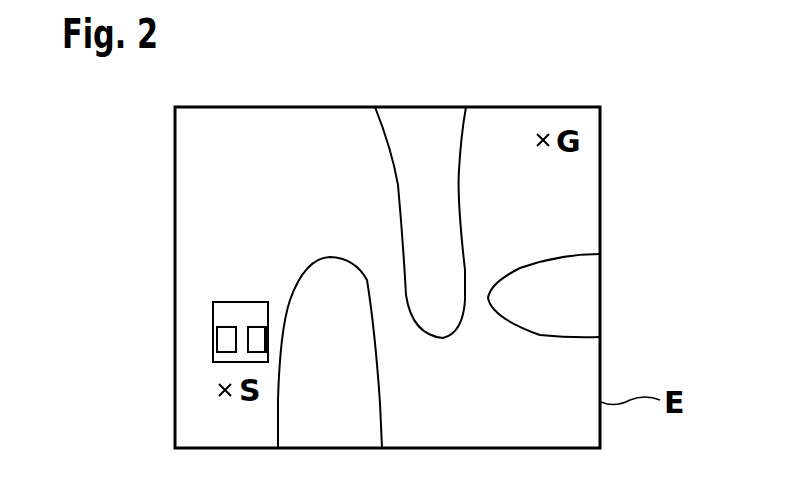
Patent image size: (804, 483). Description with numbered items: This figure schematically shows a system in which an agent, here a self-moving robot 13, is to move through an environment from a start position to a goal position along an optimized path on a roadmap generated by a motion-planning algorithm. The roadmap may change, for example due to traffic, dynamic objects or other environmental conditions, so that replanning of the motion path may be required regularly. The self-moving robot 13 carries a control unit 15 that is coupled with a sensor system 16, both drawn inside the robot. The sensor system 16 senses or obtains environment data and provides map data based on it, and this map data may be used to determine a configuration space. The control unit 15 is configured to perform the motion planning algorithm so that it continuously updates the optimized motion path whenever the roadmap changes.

The self-moving robot 13 is at (228, 302).
The control unit 15 is at (223, 341).
The sensor system 16 is at (257, 327).